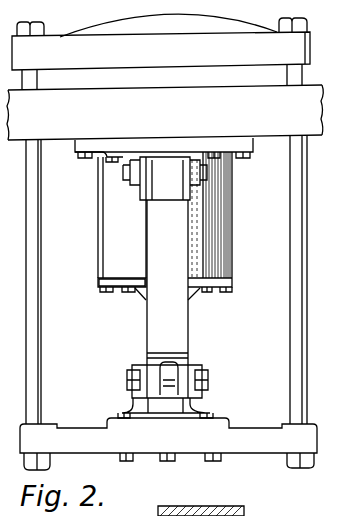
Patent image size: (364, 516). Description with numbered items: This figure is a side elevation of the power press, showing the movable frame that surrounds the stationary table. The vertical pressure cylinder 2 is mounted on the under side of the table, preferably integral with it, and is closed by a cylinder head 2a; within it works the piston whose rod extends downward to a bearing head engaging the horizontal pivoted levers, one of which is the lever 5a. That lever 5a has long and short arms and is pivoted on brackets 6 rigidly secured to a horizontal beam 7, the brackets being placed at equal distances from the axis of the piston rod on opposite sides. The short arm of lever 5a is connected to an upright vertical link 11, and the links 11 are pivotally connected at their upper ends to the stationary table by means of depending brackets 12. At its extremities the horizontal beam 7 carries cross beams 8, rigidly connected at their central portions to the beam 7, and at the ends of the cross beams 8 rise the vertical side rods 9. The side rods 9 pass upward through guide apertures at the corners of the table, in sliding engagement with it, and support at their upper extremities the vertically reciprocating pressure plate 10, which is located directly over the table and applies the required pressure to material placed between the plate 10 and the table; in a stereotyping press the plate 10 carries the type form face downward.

The pressure plate 10 is at (161, 42).
The depending brackets 12 is at (206, 143).
The pressure cylinder 2 is at (115, 213).
The cylinder head 2a is at (119, 288).
The vertical links 11 is at (180, 325).
The pivoted lever 5a is at (205, 375).
The brackets 6 is at (198, 402).
The cross beams 8 is at (234, 445).
The horizontal beam 7 is at (245, 510).
The side rods 9 is at (32, 373).